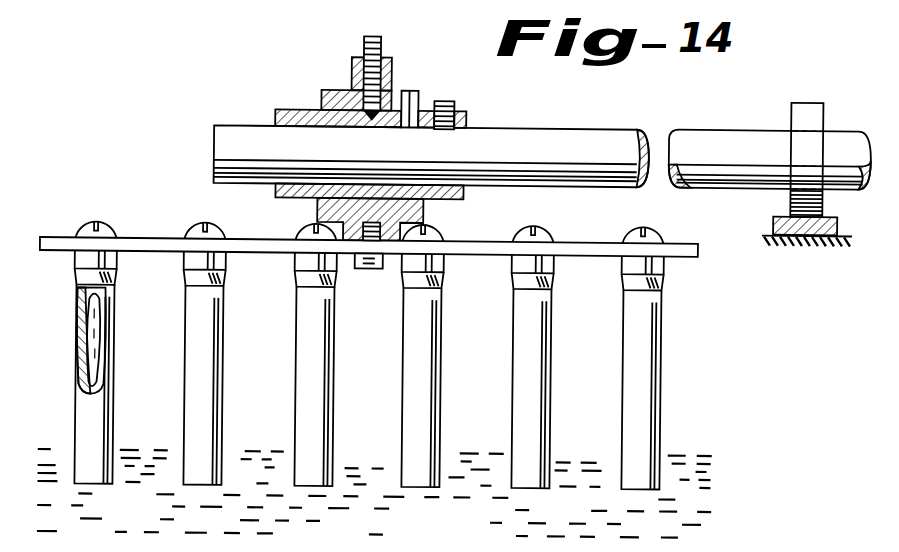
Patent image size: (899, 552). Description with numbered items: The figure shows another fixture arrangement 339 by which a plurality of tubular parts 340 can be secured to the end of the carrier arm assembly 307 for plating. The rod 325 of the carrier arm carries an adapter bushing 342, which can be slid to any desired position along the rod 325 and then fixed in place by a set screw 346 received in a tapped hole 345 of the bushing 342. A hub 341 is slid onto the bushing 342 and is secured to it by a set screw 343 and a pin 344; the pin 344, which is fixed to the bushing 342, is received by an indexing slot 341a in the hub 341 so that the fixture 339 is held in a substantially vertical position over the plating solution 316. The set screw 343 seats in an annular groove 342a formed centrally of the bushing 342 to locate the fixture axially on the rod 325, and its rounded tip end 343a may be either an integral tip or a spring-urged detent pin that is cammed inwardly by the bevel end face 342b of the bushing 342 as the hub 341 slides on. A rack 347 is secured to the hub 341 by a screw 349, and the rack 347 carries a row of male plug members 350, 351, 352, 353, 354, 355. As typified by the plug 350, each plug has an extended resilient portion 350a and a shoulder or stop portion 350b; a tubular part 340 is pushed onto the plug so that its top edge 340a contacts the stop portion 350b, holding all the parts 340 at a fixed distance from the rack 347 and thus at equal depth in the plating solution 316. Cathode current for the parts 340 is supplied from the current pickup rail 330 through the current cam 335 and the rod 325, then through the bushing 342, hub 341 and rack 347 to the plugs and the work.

The carrier arm assembly 307 is at (580, 122).
The liquid bath 316 is at (452, 528).
The rod 325 is at (207, 146).
The current pickup rail 330 is at (775, 216).
The current cam 335 is at (808, 97).
The fixture arrangement 339 is at (345, 69).
The parts 340 is at (367, 355).
The top edge 340a is at (116, 289).
The hub 341 is at (327, 89).
The indexing slot 341a is at (420, 108).
The adapter bushing 342 is at (465, 188).
The annular groove 342a is at (318, 197).
The bevel end face 342b is at (280, 115).
The set screw 343 is at (378, 38).
The rounded tip end 343a is at (368, 107).
The pin 344 is at (409, 88).
The tapped hole 345 is at (462, 114).
The set screw 346 is at (446, 99).
The rack 347 is at (468, 241).
The screw 349 is at (373, 265).
The male plug member 350 is at (110, 273).
The extended resilient portion 350a is at (103, 337).
The shoulder or stop portion 350b is at (80, 287).
The male plug member 351 is at (224, 271).
The male plug member 352 is at (298, 279).
The male plug member 353 is at (438, 275).
The male plug member 354 is at (548, 268).
The male plug member 355 is at (660, 276).